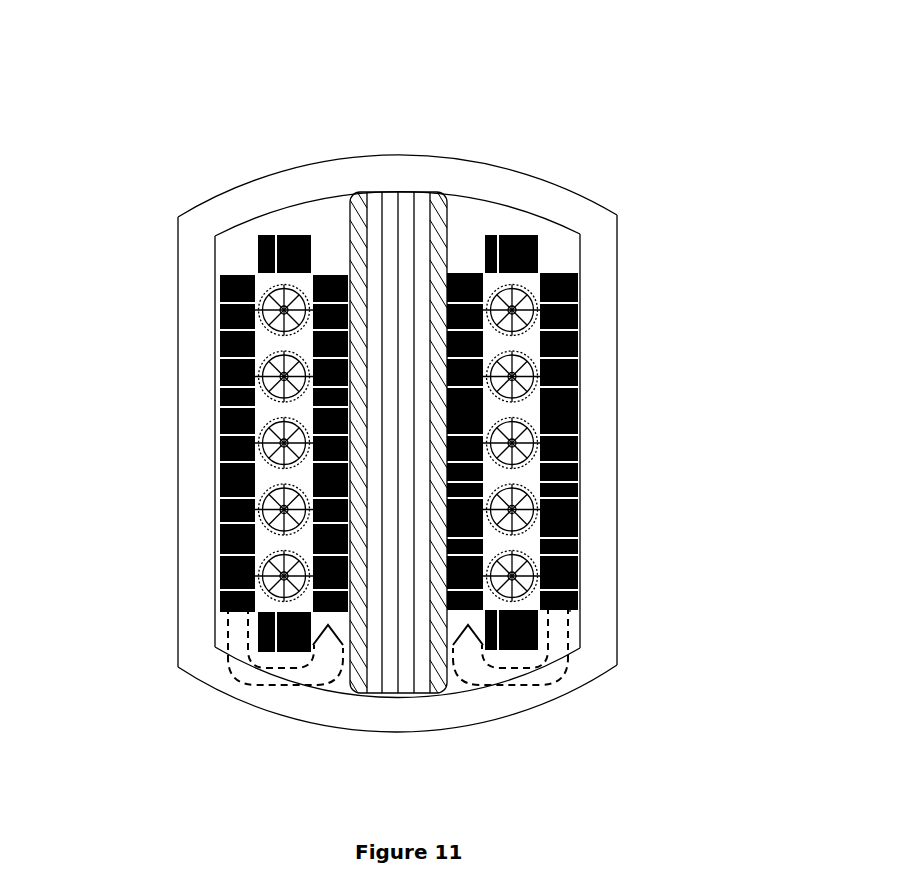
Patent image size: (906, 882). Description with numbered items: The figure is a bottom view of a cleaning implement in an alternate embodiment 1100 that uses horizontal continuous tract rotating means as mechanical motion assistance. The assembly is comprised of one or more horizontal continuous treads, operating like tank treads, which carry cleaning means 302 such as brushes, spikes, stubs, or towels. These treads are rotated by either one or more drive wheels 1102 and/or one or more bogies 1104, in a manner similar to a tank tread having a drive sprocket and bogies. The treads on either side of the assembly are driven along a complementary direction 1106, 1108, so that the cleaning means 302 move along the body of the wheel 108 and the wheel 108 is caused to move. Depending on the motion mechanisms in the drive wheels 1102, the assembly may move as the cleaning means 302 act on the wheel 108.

The wheel 108 is at (295, 239).
The cleaning means 302 is at (382, 265).
The alternate embodiment 1100 is at (663, 120).
The drive wheels 1102 is at (287, 304).
The bogies 1104 is at (289, 509).
The complementary direction 1106 is at (563, 645).
The complementary direction 1108 is at (243, 647).